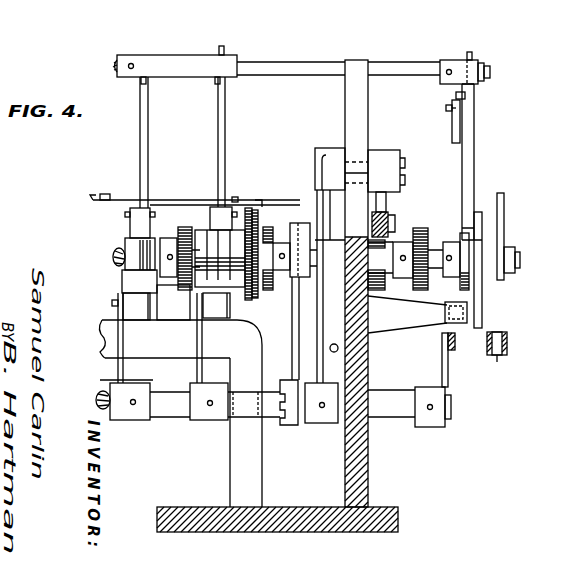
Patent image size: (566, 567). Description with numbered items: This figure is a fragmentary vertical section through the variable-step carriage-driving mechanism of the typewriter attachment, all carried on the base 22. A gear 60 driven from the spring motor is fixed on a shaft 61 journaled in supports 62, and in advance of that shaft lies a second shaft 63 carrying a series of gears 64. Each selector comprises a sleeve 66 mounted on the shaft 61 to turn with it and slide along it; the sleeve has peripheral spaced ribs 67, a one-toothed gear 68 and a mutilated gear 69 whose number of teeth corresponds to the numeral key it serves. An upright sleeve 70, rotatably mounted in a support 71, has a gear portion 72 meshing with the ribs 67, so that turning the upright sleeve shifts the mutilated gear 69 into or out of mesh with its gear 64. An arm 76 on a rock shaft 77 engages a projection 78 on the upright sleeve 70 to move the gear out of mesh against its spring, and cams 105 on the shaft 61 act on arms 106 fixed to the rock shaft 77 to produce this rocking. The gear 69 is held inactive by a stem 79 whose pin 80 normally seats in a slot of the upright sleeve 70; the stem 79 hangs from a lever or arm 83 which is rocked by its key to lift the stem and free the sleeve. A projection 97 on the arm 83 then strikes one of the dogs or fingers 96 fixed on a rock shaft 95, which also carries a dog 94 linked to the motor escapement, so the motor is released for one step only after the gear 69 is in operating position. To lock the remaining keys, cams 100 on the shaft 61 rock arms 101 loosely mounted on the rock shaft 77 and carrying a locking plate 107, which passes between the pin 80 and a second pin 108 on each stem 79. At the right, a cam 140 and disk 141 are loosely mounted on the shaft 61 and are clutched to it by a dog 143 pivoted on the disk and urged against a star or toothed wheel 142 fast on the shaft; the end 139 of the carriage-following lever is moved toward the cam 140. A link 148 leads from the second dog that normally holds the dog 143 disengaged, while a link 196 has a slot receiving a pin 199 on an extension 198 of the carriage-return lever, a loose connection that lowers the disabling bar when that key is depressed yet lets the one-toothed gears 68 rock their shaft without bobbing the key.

The base 22 is at (281, 511).
The gear 60 is at (423, 291).
The shaft 61 is at (170, 246).
The supports 62 is at (362, 358).
The shaft 63 is at (113, 255).
The gears 64 is at (272, 230).
The sleeve 66 is at (247, 208).
The peripheral spaced ribs 67 is at (192, 238).
The one-toothed gear 68 is at (254, 210).
The mutilated gear 69 is at (262, 200).
The upright sleeve 70 is at (135, 232).
The support 71 is at (130, 284).
The gear portion 72 is at (143, 254).
The arm 76 is at (197, 345).
The rock shaft 77 is at (95, 400).
The projection 78 is at (112, 305).
The stem 79 is at (150, 130).
The pin 80 is at (128, 214).
The lever or arm 83 is at (139, 80).
The dog 94 is at (466, 54).
The rock shaft 95 is at (297, 62).
The dogs or fingers 96 is at (218, 50).
The projection 97 is at (150, 79).
The cams 100 is at (312, 215).
The arms 101 is at (319, 383).
The cams or projections 105 is at (376, 291).
The arms 106 is at (296, 312).
The locking plate 107 is at (100, 197).
The pin 108 is at (123, 188).
The end of lever 139 is at (497, 360).
The cam 140 is at (497, 280).
The disk 141 is at (478, 205).
The star or toothed gear 142 is at (466, 277).
The dog 143 is at (478, 242).
The link 148 is at (475, 143).
The link 196 is at (453, 132).
The extension 198 is at (465, 95).
The pin or projection 199 is at (447, 110).